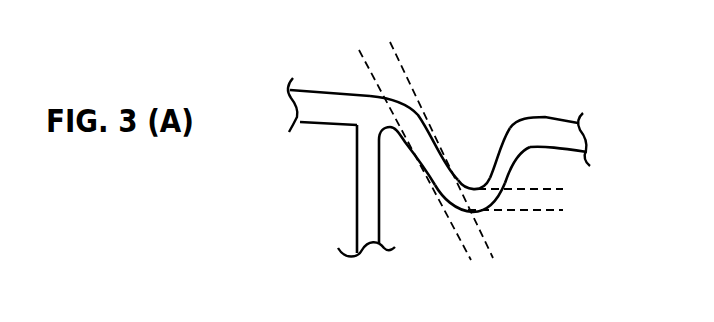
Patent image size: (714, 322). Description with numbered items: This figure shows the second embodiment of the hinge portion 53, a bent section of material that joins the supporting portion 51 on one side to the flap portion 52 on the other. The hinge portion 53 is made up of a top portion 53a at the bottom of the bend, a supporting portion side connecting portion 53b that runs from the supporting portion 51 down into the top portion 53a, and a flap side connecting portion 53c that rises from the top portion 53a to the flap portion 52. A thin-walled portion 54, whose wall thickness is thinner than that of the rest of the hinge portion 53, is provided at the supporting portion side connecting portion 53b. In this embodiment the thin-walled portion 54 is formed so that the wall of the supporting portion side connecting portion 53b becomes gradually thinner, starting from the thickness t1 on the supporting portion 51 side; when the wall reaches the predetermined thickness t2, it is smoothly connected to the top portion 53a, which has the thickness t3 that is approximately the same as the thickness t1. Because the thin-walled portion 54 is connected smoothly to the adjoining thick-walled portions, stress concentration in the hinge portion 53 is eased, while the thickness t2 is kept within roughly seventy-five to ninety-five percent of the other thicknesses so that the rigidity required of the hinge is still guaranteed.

The supporting portion 51 is at (320, 105).
The flap portion 52 is at (543, 132).
The hinge portion 53 is at (401, 180).
The top portion 53a is at (477, 191).
The supporting portion side connecting portion 53b is at (413, 142).
The flap side connecting portion 53c is at (512, 150).
The thin-walled portion 54 is at (425, 172).
The thickness of the thick-walled portion of the supporting portion side connecting t1 is at (352, 80).
The thickness of the thin-walled portion t2 is at (508, 228).
The thickness of the top portion t3 is at (544, 166).